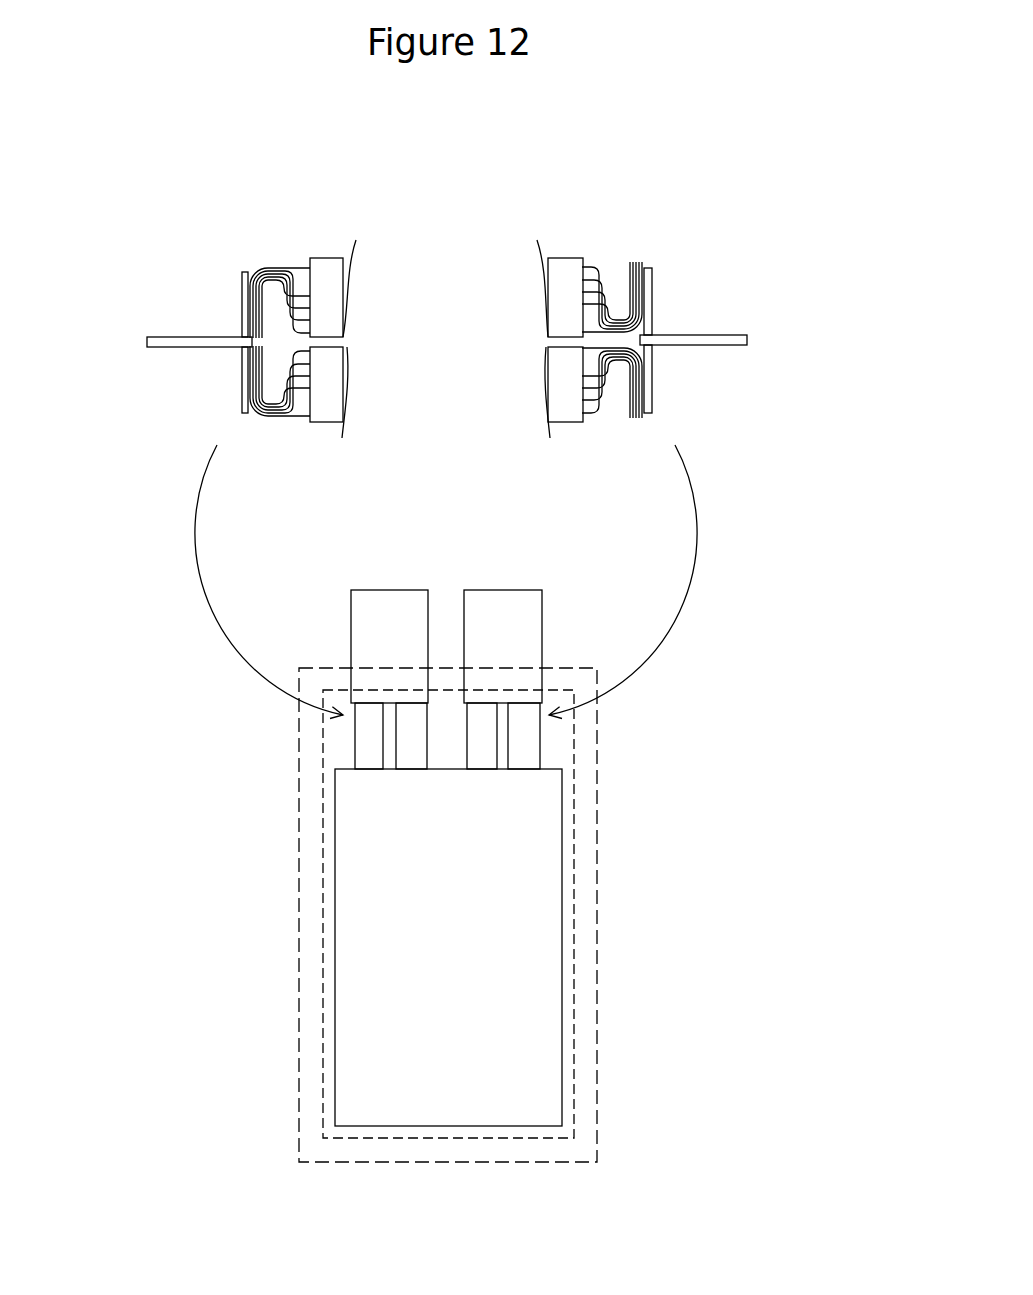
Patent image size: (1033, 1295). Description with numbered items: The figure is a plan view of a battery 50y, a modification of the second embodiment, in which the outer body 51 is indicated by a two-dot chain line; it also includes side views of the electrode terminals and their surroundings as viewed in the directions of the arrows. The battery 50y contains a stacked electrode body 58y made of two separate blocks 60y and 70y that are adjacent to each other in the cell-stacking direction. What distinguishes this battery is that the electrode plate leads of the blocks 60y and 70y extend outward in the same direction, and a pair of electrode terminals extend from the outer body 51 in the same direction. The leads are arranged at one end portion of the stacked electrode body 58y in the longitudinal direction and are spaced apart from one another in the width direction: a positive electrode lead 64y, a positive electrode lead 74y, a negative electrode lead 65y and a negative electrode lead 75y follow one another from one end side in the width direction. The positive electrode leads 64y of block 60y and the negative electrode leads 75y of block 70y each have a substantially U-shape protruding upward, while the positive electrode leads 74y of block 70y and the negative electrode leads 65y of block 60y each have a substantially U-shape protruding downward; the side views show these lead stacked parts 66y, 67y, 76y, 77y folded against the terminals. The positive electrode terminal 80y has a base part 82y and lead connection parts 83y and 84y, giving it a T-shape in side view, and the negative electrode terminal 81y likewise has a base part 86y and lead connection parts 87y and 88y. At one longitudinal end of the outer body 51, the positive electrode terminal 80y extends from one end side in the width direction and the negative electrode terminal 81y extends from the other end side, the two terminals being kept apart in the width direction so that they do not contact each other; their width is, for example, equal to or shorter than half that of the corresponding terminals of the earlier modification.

The battery 50y is at (706, 132).
The outer body 51 is at (299, 1040).
The stacked electrode body 58y is at (677, 845).
The block 60y is at (330, 257).
The block 70y is at (325, 424).
The positive electrode lead 64y is at (297, 266).
The negative electrode lead 65y is at (598, 266).
The positive electrode tab foil stack 66y is at (258, 266).
The negative electrode tab foil stack 67y is at (640, 266).
The positive electrode lead 74y is at (298, 422).
The negative electrode lead 75y is at (600, 422).
The lower positive tab foil stack 76y is at (258, 422).
The lower negative tab foil stack 77y is at (642, 422).
The positive electrode terminal 80y is at (93, 270).
The negative electrode terminal 81y is at (806, 270).
The base part 82y is at (180, 337).
The lead connection part 83y is at (242, 287).
The lead connection part 84y is at (242, 372).
The base part 86y is at (712, 336).
The lead connection part 87y is at (652, 287).
The lead connection part 88y is at (652, 372).